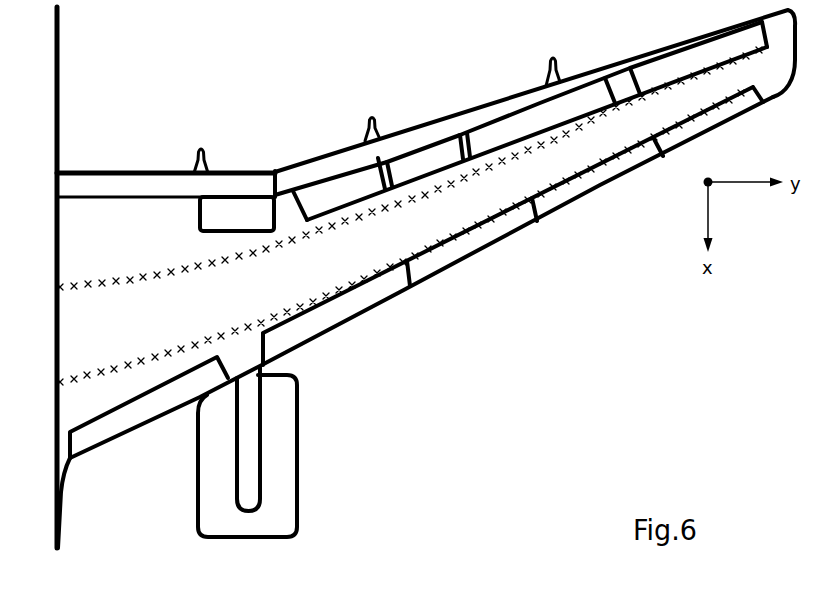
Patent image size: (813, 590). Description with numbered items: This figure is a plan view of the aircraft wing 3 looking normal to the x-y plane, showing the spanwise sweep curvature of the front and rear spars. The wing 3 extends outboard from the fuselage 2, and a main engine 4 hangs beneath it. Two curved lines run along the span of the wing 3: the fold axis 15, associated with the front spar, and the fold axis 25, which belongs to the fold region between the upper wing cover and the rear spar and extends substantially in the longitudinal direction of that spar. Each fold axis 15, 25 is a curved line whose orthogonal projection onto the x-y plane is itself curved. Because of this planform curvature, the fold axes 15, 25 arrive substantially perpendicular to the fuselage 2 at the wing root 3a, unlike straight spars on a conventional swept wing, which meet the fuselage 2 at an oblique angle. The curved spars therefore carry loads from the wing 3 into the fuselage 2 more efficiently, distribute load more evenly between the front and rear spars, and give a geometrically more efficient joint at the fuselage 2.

The fuselage 2 is at (56, 76).
The wing 3 is at (172, 250).
The wing root 3a is at (71, 249).
The fold axis 25 is at (130, 280).
The fold axis 15 is at (97, 385).
The main engine 4 is at (283, 515).